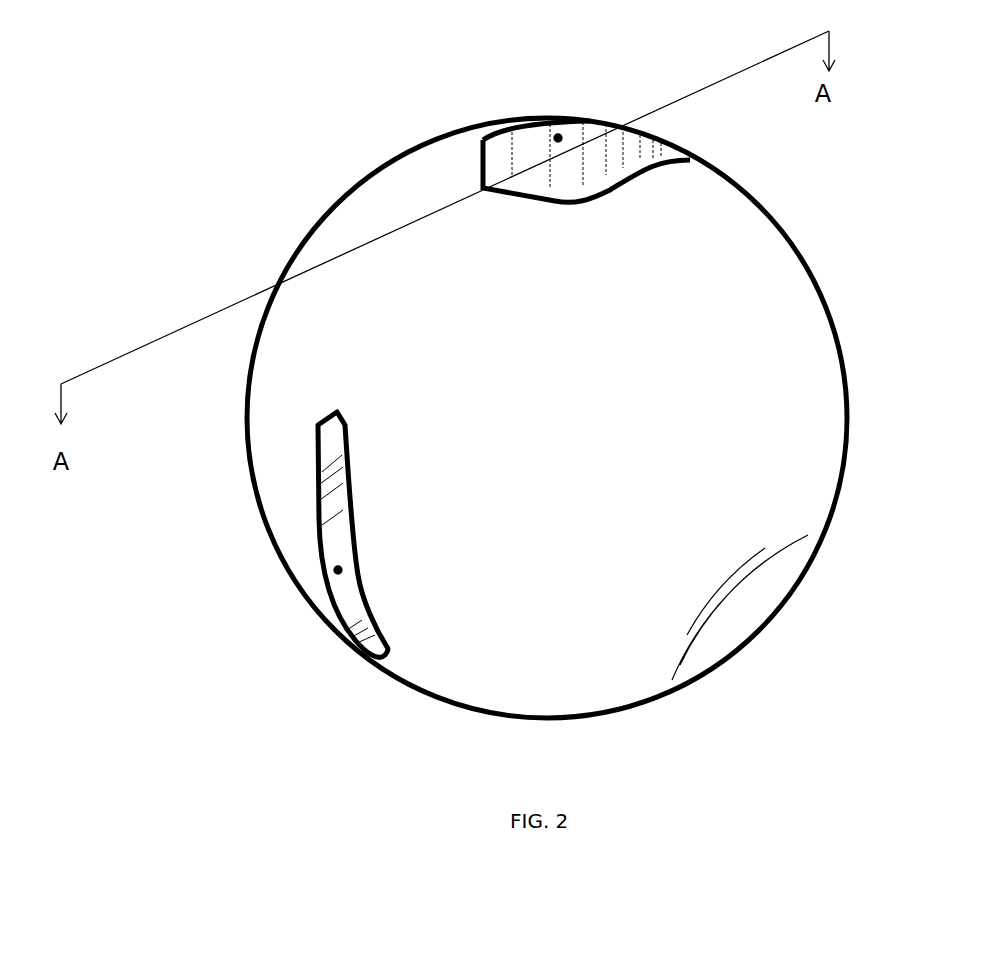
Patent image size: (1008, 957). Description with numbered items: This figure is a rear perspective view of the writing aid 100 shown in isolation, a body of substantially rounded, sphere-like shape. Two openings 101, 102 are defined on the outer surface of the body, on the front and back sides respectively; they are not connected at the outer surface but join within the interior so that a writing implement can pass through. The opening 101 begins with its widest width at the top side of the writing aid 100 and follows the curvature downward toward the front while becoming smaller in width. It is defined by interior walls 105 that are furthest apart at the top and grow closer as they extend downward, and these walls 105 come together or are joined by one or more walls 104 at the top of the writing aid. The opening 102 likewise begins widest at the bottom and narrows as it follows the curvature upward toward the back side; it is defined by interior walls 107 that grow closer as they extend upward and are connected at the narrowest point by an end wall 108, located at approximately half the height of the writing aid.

The writing aid 100 is at (245, 259).
The opening 101 is at (522, 171).
The opening 102 is at (256, 544).
The walls 104 is at (477, 170).
The interior walls 105 is at (557, 134).
The interior walls 107 is at (317, 646).
The end wall 108 is at (330, 412).